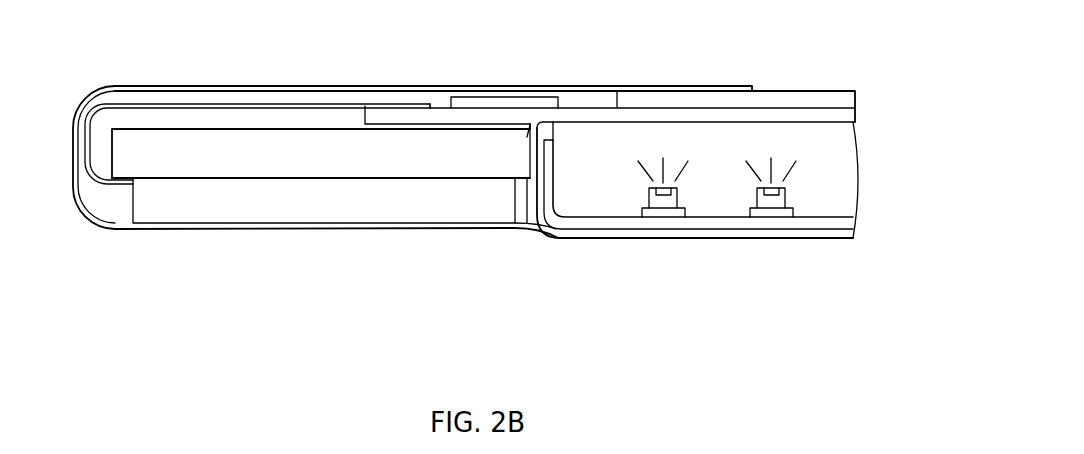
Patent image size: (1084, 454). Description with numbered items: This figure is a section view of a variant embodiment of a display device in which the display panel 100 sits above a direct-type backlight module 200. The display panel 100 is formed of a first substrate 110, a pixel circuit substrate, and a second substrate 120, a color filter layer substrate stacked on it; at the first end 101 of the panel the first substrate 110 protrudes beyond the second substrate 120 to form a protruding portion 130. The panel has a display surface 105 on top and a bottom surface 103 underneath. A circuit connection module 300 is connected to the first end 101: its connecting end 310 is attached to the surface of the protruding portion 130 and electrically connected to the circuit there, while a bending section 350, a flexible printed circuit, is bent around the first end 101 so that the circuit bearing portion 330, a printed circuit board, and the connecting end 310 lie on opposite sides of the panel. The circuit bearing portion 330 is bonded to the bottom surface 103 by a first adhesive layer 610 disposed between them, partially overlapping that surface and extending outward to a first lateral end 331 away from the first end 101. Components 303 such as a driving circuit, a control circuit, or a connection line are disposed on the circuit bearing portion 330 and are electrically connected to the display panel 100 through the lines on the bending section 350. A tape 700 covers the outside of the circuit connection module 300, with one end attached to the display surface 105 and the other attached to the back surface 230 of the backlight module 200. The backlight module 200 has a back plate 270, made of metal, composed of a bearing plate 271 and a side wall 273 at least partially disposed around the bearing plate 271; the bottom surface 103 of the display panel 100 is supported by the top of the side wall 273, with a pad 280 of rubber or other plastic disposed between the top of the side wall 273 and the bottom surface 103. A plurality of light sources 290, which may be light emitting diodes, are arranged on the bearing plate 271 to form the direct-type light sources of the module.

The display panel 100 is at (943, 52).
The first substrate 110 is at (855, 119).
The second substrate 120 is at (857, 98).
The display surface 105 is at (800, 88).
The protruding portion 130 is at (483, 97).
The pad 280 is at (549, 124).
The first adhesive layer 610 is at (437, 124).
The first end 101 is at (359, 120).
The tape 700 is at (248, 87).
The circuit connection module 300 is at (407, 286).
The first lateral end 331 is at (84, 137).
The bending section 350 is at (64, 182).
The circuit bearing portion 330 is at (228, 158).
The components 303 is at (464, 200).
The connecting end 310 is at (430, 108).
The bottom surface 103 is at (529, 225).
The backlight module 200 is at (861, 126).
The side wall 273 is at (546, 168).
The light sources 290 is at (779, 201).
The back surface 230 is at (739, 239).
The back plate 270 is at (706, 300).
The bearing plate 271 is at (696, 220).